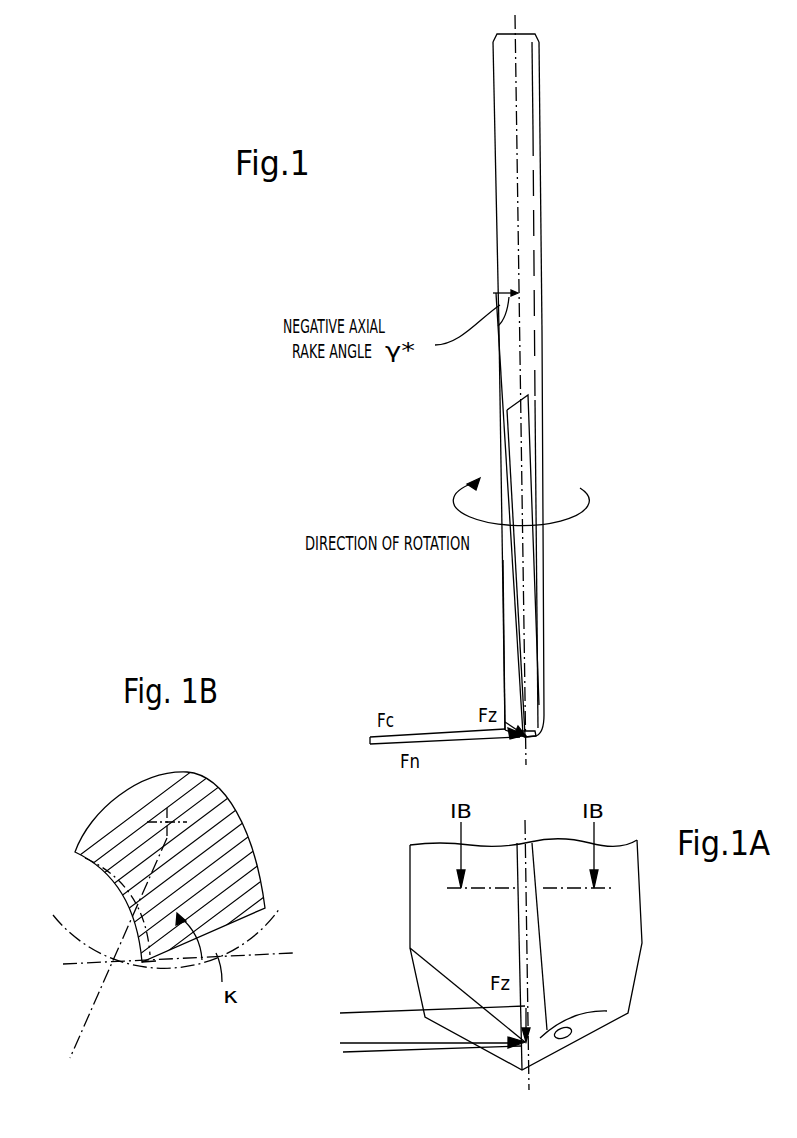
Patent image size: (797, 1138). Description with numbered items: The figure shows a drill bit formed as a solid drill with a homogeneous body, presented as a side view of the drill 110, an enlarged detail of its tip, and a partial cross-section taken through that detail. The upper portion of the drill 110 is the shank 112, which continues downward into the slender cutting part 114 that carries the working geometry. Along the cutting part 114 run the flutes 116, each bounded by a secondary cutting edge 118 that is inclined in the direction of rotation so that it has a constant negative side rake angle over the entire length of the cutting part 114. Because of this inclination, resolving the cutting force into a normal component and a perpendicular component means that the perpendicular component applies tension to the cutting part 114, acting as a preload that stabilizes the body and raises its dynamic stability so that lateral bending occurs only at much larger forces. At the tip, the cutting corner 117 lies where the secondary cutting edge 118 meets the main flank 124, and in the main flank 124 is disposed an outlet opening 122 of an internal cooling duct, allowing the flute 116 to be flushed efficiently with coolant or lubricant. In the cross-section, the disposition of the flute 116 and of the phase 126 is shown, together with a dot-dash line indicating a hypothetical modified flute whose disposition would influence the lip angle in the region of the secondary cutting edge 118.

In FIG. 1, the drill 110 is at (546, 408).
In FIG. 1, the shank 112 is at (528, 183).
In FIG. 1, the cutting part 114 is at (525, 537).
In FIG. 1, the flute 116 is at (512, 623).
In FIG. 1B, the flute 116 is at (213, 862).
In FIG. 1, the cutting corner 117 is at (536, 738).
In FIG. 1A, the cutting corner 117 is at (608, 1027).
In FIG. 1, the secondary cutting edge 118 is at (514, 662).
In FIG. 1A, the secondary cutting edge 118 is at (514, 915).
In FIG. 1A, the outlet opening 122 is at (568, 1040).
In FIG. 1A, the main flank 124 is at (541, 1050).
In FIG. 1B, the phase 126 is at (157, 963).